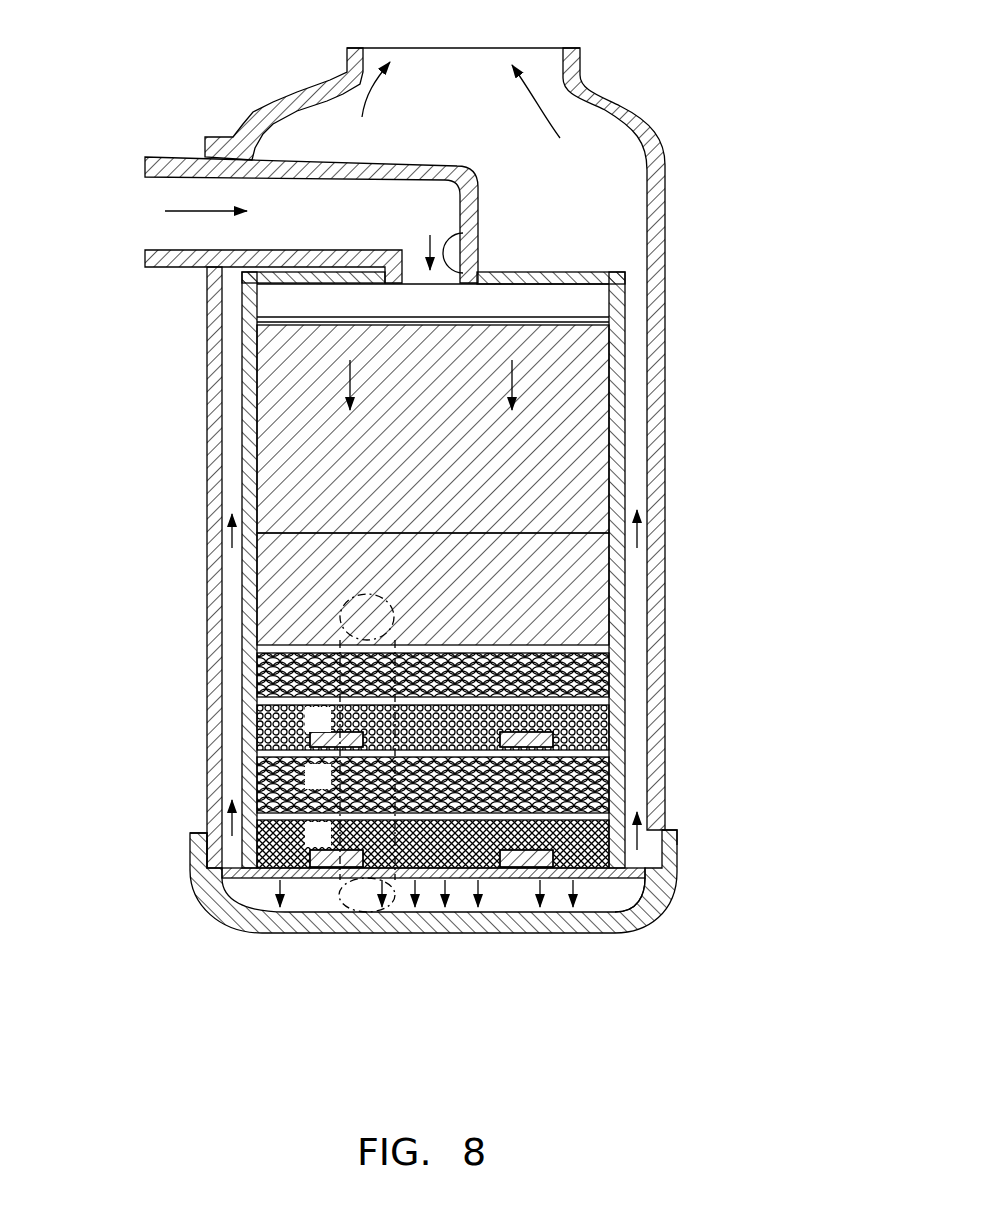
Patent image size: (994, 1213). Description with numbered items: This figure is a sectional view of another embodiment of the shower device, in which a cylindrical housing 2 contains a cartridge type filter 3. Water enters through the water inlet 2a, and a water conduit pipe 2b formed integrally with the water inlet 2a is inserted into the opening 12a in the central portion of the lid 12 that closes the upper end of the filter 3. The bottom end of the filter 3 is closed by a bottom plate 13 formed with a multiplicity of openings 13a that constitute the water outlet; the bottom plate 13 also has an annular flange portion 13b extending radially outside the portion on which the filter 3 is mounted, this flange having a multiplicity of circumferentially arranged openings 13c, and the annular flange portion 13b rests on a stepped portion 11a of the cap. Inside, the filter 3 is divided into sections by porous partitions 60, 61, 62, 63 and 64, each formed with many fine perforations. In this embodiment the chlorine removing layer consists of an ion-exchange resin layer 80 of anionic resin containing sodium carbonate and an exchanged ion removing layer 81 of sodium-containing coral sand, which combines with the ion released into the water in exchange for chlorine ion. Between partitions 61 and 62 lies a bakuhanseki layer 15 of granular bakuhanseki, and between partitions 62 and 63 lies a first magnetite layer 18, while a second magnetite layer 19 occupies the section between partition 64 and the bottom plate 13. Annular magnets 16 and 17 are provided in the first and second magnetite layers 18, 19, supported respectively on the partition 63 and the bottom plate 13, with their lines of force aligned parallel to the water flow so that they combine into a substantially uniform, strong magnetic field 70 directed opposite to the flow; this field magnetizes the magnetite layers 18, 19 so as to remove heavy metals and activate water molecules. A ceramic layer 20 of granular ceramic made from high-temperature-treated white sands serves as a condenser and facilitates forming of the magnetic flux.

The housing 2 is at (655, 327).
The water inlet 2a is at (172, 155).
The water conduit pipe 2b is at (465, 174).
The cartridge type filter 3 is at (422, 485).
The stepped portion 11a is at (232, 887).
The lid 12 is at (575, 275).
The opening 12a is at (478, 237).
The bottom plate 13 is at (542, 878).
The openings 13a is at (383, 875).
The annular flange portion 13b is at (663, 895).
The openings 13c is at (635, 880).
The bakuhanseki layer 15 is at (419, 660).
The annular magnet 16 is at (527, 878).
The annular magnet 17 is at (306, 879).
The first magnetite layer 18 is at (416, 709).
The second magnetite layer 19 is at (413, 820).
The ceramic layer 20 is at (417, 764).
The porous partition 60 is at (613, 301).
The porous partition 61 is at (597, 650).
The porous partition 62 is at (597, 700).
The porous partition 63 is at (597, 752).
The porous partition 64 is at (597, 813).
The magnetic field 70 is at (340, 610).
The ion-exchange resin layer 80 is at (280, 412).
The exchanged ion removing layer 81 is at (280, 577).